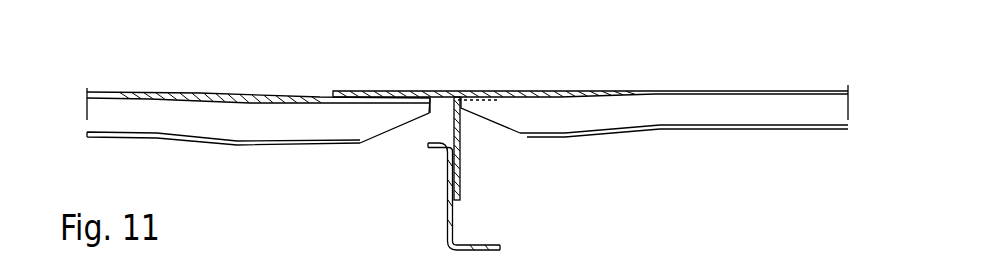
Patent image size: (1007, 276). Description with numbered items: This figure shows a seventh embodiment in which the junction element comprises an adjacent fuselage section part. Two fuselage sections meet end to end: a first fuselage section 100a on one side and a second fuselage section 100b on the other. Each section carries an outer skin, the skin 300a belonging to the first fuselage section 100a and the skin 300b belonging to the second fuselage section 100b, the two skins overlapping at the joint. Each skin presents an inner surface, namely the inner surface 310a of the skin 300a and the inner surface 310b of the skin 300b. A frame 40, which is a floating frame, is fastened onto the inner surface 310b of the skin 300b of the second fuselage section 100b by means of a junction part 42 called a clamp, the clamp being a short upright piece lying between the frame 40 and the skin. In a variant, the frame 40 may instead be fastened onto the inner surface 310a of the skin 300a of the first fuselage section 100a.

The skin 300a is at (250, 93).
The skin 300b is at (592, 91).
The inner surface 310a is at (392, 105).
The inner surface 310b is at (519, 101).
The first fuselage section 100a is at (262, 169).
The second fuselage section 100b is at (633, 144).
The frame 40 is at (435, 199).
The junction part 42 is at (470, 164).